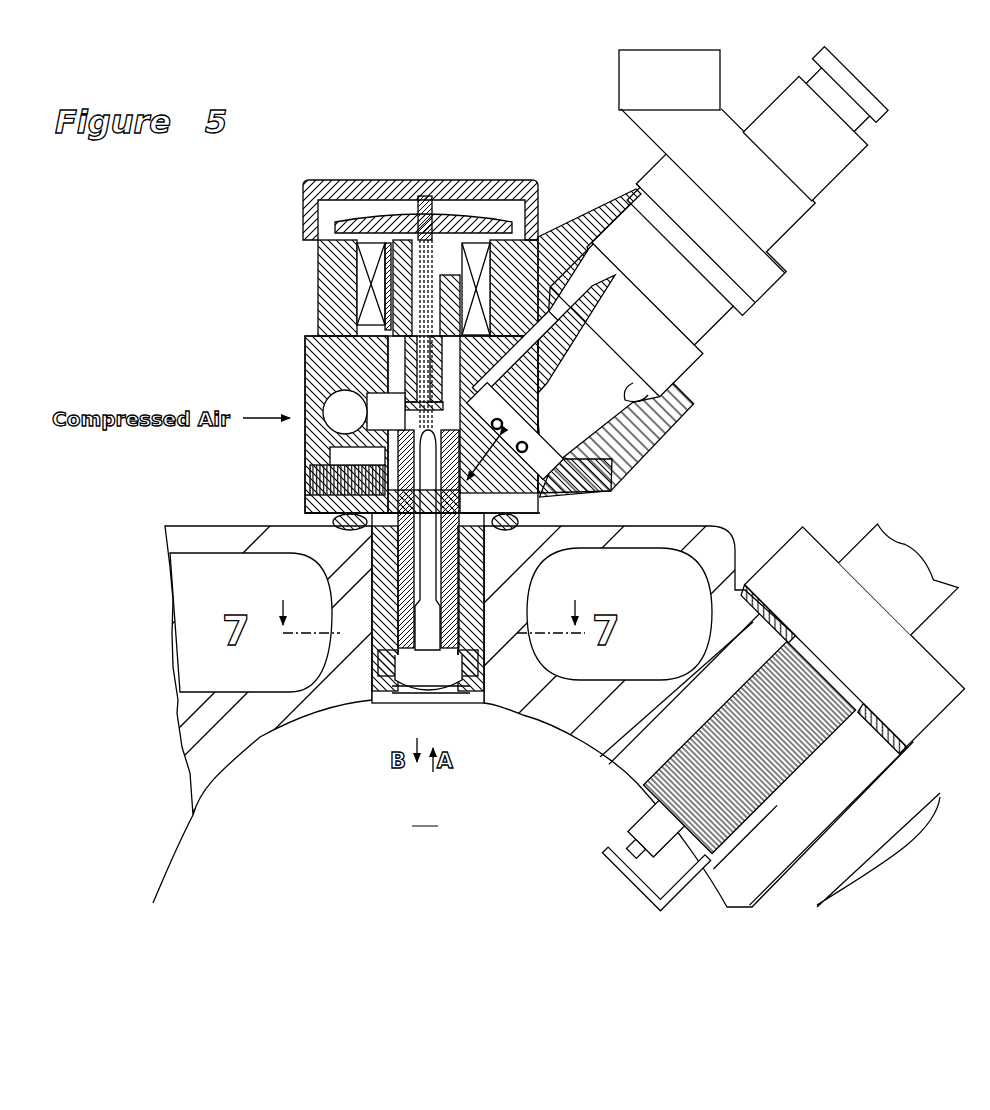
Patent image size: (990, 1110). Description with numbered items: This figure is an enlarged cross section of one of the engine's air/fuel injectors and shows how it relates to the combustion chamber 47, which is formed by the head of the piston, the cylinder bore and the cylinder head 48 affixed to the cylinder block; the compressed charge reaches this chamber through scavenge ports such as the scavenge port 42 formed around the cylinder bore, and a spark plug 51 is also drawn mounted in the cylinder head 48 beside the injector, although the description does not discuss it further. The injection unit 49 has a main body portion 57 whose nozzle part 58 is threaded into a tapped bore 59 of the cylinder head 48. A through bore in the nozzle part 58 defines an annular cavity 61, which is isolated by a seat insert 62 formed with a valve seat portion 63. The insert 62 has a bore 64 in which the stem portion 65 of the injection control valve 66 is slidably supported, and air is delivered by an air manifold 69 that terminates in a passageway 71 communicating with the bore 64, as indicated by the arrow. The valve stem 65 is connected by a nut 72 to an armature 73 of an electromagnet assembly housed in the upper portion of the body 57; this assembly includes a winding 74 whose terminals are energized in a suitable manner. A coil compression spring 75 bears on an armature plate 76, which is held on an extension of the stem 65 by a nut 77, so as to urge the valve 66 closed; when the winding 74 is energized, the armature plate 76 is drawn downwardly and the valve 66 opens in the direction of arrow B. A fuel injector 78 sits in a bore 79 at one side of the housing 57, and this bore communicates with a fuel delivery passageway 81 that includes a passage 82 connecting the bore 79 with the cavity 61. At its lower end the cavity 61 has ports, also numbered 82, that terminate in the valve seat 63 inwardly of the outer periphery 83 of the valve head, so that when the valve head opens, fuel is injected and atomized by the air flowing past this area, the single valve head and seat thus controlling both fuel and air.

The scavenge port 42 is at (532, 190).
The combustion chamber 47 is at (424, 813).
The cylinder head 48 is at (715, 528).
The injection unit 49 is at (316, 275).
The spark plug 51 is at (808, 537).
The main body portion 57 is at (533, 257).
The nozzle part 58 is at (372, 650).
The tapped bore 59 is at (333, 528).
The annular cavity 61 is at (484, 580).
The seat insert 62 is at (480, 640).
The valve seat portion 63 is at (480, 690).
The bore 64 is at (420, 592).
The stem portion 65 is at (372, 572).
The injection control valve 66 is at (437, 700).
The air manifold 69 is at (322, 446).
The passageway 71 is at (325, 405).
The nut 72 is at (478, 400).
The armature 73 is at (505, 356).
The winding 74 is at (440, 290).
The coil compression spring 75 is at (436, 210).
The armature plate 76 is at (370, 222).
The nut 77 is at (372, 245).
The fuel injector 78 is at (707, 318).
The bore 79 is at (645, 395).
The fuel delivery passageway 81 is at (520, 425).
The passage 82 is at (518, 511).
The outer periphery 83 is at (445, 688).